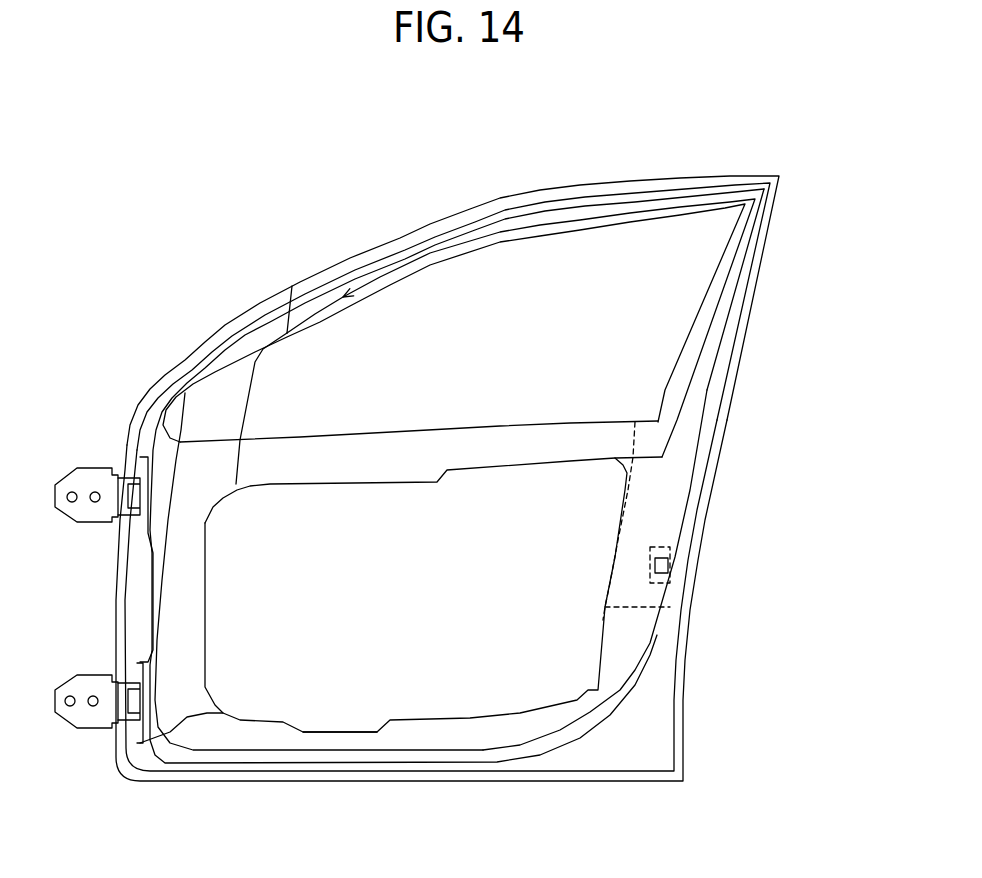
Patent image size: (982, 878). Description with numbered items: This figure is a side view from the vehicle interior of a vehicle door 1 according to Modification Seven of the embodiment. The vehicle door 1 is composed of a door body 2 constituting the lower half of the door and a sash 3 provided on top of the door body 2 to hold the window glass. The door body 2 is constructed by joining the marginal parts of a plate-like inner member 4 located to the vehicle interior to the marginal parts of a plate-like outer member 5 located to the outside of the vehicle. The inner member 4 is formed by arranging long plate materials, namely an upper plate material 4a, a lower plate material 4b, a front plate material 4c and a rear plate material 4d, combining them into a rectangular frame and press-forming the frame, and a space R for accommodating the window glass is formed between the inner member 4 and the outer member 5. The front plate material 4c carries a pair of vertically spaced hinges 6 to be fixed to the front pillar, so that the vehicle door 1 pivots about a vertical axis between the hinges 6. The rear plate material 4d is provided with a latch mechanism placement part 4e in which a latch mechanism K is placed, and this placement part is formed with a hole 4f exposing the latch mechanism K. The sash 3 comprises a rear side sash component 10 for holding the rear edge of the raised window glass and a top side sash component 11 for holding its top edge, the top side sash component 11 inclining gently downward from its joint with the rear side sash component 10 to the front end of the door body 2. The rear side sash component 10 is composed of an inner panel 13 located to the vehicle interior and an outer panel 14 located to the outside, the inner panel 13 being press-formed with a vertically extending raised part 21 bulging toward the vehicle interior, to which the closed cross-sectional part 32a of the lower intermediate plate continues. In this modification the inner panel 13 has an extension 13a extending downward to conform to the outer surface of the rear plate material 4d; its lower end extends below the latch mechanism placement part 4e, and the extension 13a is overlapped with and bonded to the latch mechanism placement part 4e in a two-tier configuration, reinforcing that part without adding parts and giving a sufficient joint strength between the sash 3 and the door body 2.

The vehicle door 1 is at (172, 181).
The door body 2 is at (778, 463).
The sash 3 is at (857, 130).
The inner member 4 is at (662, 487).
The upper plate material 4a is at (387, 443).
The lower plate material 4b is at (425, 735).
The front plate material 4c is at (133, 575).
The rear plate material 4d is at (650, 645).
The latch mechanism placement part 4e is at (668, 580).
The hole 4f is at (667, 567).
The outer member 5 is at (702, 527).
The hinges 6 is at (80, 467).
The rear side sash component 10 is at (817, 273).
The top side sash component 11 is at (748, 170).
The inner panel 13 is at (735, 328).
The extension 13a is at (613, 610).
The outer panel 14 is at (755, 303).
The raised part 21 is at (705, 375).
The closed cross-sectional part 32a is at (587, 210).
The latch mechanism K is at (650, 553).
The space R is at (496, 566).